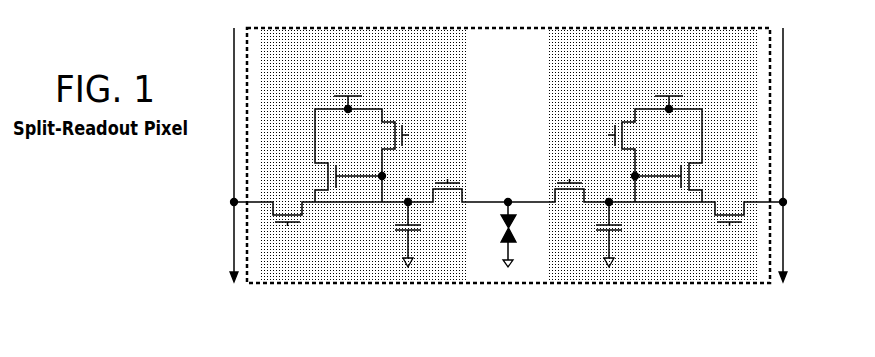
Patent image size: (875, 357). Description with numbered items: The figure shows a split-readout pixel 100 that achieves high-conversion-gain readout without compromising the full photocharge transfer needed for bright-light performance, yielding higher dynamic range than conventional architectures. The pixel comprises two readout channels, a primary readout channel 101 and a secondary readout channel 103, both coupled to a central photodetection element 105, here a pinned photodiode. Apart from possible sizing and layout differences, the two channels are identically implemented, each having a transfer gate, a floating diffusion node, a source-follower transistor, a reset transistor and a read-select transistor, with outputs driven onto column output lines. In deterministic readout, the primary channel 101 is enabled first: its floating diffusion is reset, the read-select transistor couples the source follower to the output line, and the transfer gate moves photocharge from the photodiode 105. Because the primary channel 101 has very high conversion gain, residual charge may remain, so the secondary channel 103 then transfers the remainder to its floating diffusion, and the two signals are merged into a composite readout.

The split-readout pixel 100 is at (703, 312).
The primary readout channel 101 is at (300, 83).
The secondary readout channel 103 is at (590, 83).
The photodetection element 105 is at (500, 233).